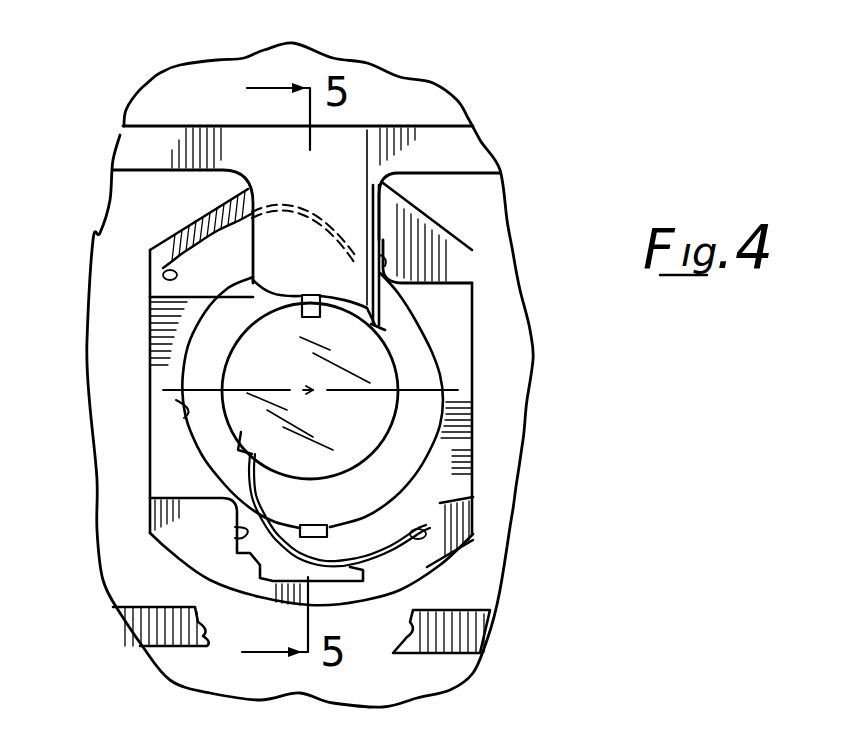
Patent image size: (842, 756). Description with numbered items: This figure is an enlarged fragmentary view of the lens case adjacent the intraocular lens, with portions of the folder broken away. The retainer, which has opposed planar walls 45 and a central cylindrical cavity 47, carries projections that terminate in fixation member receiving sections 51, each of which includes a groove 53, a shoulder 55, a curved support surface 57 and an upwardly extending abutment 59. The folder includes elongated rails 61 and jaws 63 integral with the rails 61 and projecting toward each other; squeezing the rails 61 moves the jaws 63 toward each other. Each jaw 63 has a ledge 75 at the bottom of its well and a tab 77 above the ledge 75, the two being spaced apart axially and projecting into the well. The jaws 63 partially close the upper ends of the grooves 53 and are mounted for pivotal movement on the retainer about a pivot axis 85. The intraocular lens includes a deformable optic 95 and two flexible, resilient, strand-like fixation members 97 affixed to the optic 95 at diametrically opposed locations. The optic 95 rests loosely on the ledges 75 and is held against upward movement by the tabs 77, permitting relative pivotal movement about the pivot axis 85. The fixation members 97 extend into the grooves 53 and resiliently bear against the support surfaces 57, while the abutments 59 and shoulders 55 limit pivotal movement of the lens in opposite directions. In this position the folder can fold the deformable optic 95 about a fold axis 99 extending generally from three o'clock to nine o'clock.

The planar walls 45 is at (150, 362).
The central cylindrical cavity 47 is at (176, 400).
The fixation member receiving section 51 is at (367, 132).
The groove 53 is at (193, 250).
The shoulder 55 is at (385, 258).
The curved support surface 57 is at (150, 250).
The abutment 59 is at (313, 524).
The rails 61 is at (473, 153).
The jaws 63 is at (270, 197).
The ledge 75 is at (143, 295).
The tab 77 is at (322, 292).
The pivot axis 85 is at (313, 388).
The deformable optic 95 is at (372, 425).
The fixation members 97 is at (238, 480).
The fold axis 99 is at (458, 390).